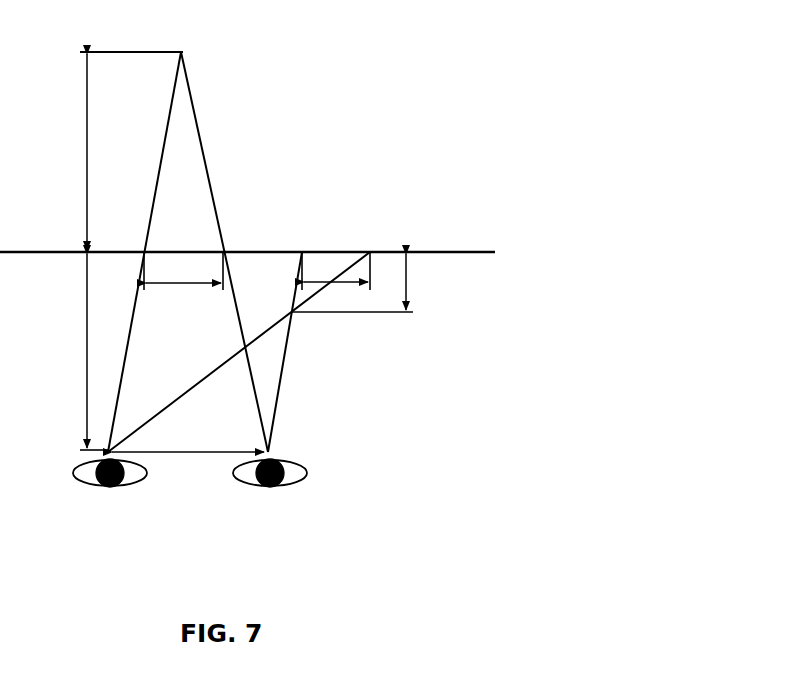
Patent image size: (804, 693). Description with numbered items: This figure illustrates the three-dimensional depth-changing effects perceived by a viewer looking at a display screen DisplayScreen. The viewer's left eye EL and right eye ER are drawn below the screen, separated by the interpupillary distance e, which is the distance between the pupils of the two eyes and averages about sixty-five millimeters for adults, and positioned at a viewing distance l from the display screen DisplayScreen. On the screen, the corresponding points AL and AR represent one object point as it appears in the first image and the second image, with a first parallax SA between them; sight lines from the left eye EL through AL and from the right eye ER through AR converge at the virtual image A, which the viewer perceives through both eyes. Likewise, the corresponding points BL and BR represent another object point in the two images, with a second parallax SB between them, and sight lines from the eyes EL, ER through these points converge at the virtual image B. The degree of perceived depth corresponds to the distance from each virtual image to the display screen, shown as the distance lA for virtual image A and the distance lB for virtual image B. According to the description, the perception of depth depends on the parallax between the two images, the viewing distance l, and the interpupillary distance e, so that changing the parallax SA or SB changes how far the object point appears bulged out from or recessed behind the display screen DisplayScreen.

The display screen DisplayScreen is at (338, 251).
The virtual image A is at (174, 247).
The corresponding point AL is at (126, 259).
The corresponding point AR is at (239, 259).
The first parallax SA is at (183, 272).
The virtual image B is at (260, 352).
The corresponding point BR is at (299, 259).
The corresponding point BL is at (367, 259).
The second parallax SB is at (336, 297).
The distance from virtual image B to the display screen lB is at (422, 282).
The distance from virtual image A to the display screen lA is at (71, 152).
The distance between the eyes and the display screen l is at (88, 352).
The distance between pupils e is at (188, 440).
The left eye EL is at (110, 495).
The right eye ER is at (270, 495).